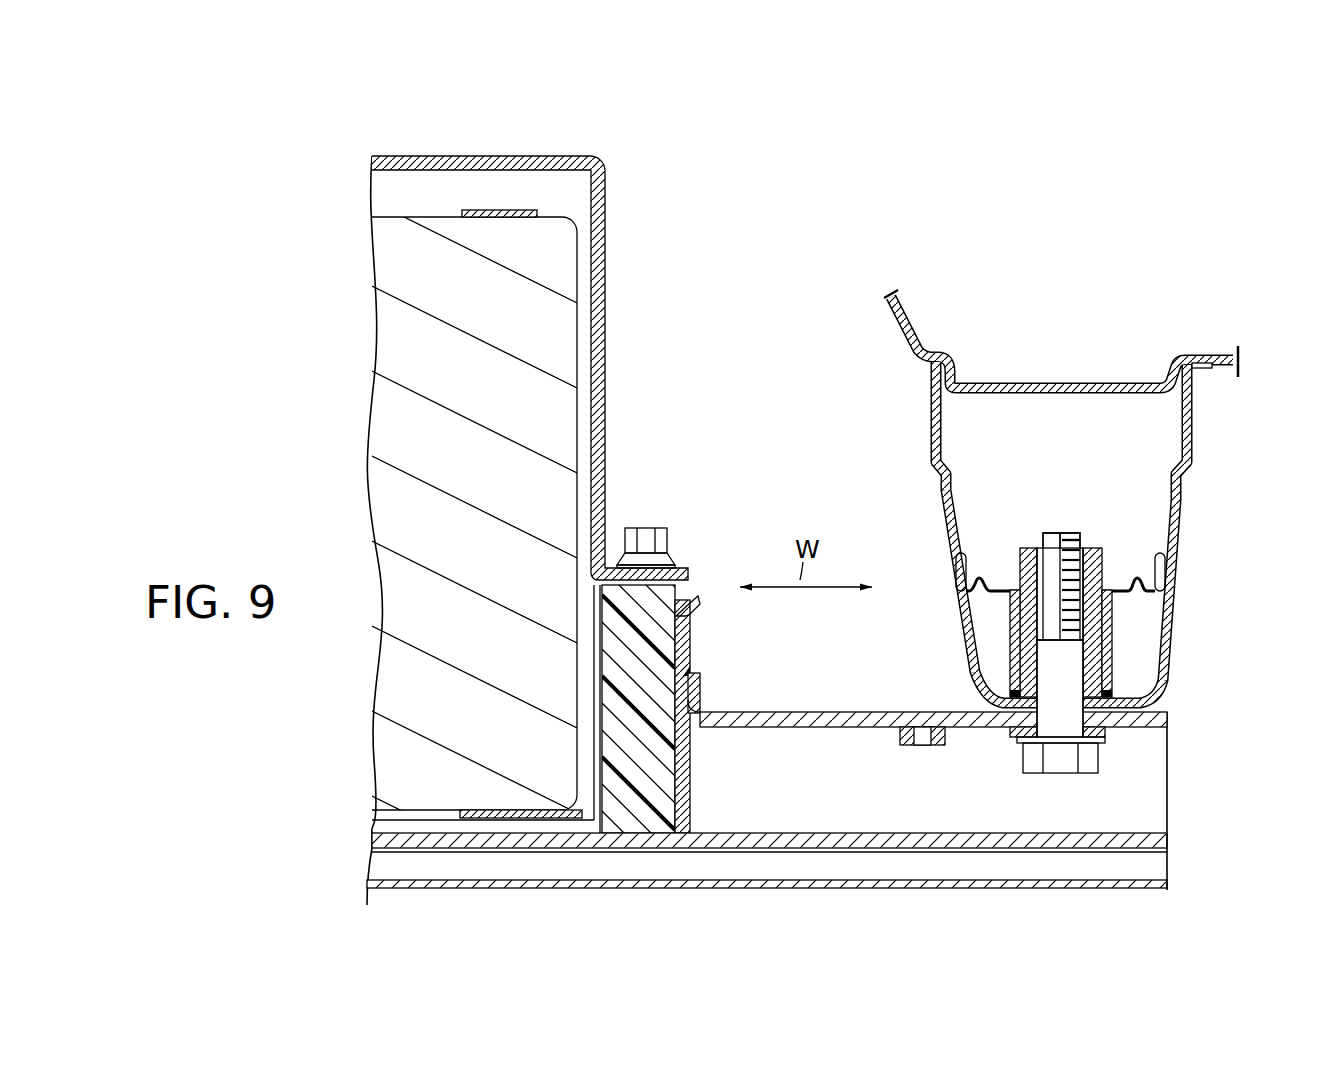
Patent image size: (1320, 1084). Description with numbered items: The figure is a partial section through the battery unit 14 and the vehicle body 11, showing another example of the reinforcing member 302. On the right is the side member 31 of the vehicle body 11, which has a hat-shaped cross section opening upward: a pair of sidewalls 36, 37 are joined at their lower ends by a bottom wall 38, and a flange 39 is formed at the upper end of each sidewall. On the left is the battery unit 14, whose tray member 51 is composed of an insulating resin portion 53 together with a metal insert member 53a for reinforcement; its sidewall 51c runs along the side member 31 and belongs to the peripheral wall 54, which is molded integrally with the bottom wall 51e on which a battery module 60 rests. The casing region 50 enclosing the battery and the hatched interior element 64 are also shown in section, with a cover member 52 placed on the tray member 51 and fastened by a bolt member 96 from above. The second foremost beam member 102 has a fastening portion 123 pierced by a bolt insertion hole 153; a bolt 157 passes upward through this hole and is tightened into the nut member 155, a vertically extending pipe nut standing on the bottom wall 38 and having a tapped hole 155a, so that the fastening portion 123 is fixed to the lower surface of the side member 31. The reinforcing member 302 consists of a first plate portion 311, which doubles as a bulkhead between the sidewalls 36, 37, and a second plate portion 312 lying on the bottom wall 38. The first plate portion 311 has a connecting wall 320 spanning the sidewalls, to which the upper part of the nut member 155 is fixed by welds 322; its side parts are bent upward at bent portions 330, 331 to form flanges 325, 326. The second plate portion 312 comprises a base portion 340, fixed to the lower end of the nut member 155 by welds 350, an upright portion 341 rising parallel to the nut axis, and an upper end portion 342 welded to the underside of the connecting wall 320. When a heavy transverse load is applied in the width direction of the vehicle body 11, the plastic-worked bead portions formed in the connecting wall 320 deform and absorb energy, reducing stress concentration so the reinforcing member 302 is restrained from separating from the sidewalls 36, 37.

The vehicle body 11 is at (1045, 298).
The battery unit 14 is at (408, 142).
The side member 31 is at (932, 450).
The sidewall 36 is at (1188, 500).
The sidewall 37 is at (948, 530).
The bottom wall 38 is at (1125, 703).
The flange 39 is at (1212, 370).
The battery case 50 is at (618, 333).
The tray member 51 is at (398, 838).
The sidewall 51c is at (627, 627).
The bottom wall 51e is at (470, 828).
The cover member 52 is at (500, 153).
The resin portion 53 is at (612, 698).
The insert member 53a is at (597, 748).
The peripheral wall 54 is at (647, 765).
The battery module 60 is at (568, 192).
The battery module 64 is at (413, 445).
The bolt member 96 is at (645, 540).
The second foremost beam member 102 is at (553, 889).
The fastening portion 123 is at (1150, 712).
The bolt insertion hole 153 is at (1112, 730).
The nut member 155 is at (1085, 665).
The tapped hole 155a is at (1050, 533).
The bolt 157 is at (1062, 727).
The reinforcing member 302 is at (1128, 626).
The first plate portion 311 is at (1155, 574).
The second plate portion 312 is at (1112, 643).
The connecting wall 320 is at (1025, 565).
The weld 322 is at (1096, 548).
The flange 325 is at (1165, 556).
The flange 326 is at (953, 556).
The bent portion 330 is at (1148, 592).
The bent portion 331 is at (967, 590).
The base portion 340 is at (1008, 704).
The upright portion 341 is at (1013, 625).
The upper end portion 342 is at (1010, 604).
The weld 350 is at (1018, 690).